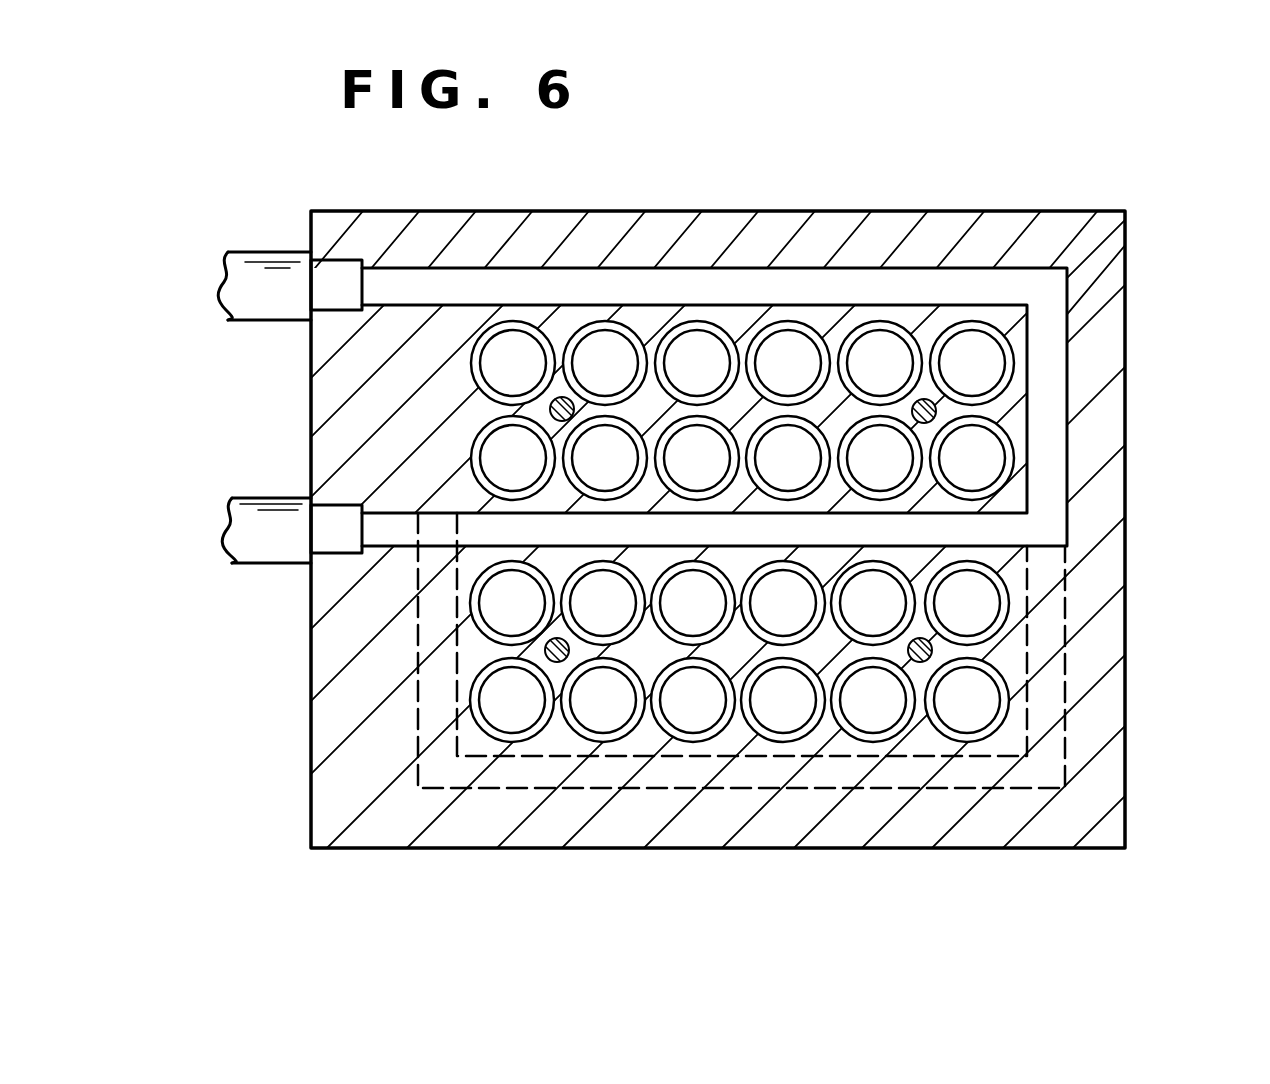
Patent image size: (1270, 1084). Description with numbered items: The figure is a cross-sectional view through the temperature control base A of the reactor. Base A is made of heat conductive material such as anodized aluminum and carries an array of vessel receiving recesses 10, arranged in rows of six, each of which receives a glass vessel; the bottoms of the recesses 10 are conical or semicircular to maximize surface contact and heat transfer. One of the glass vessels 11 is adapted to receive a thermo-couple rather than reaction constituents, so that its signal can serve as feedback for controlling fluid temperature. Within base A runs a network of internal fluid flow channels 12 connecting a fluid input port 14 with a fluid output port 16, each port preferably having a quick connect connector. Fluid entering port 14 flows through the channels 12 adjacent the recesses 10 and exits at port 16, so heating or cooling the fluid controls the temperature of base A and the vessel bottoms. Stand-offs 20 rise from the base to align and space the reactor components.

The vessel receiving recess 10 is at (538, 318).
The glass vessel 11 is at (1010, 347).
The internal fluid flow channel 12 is at (737, 277).
The fluid input port 14 is at (310, 543).
The fluid output port 16 is at (310, 300).
The stand-off 20 is at (928, 402).
The temperature control base A is at (950, 201).